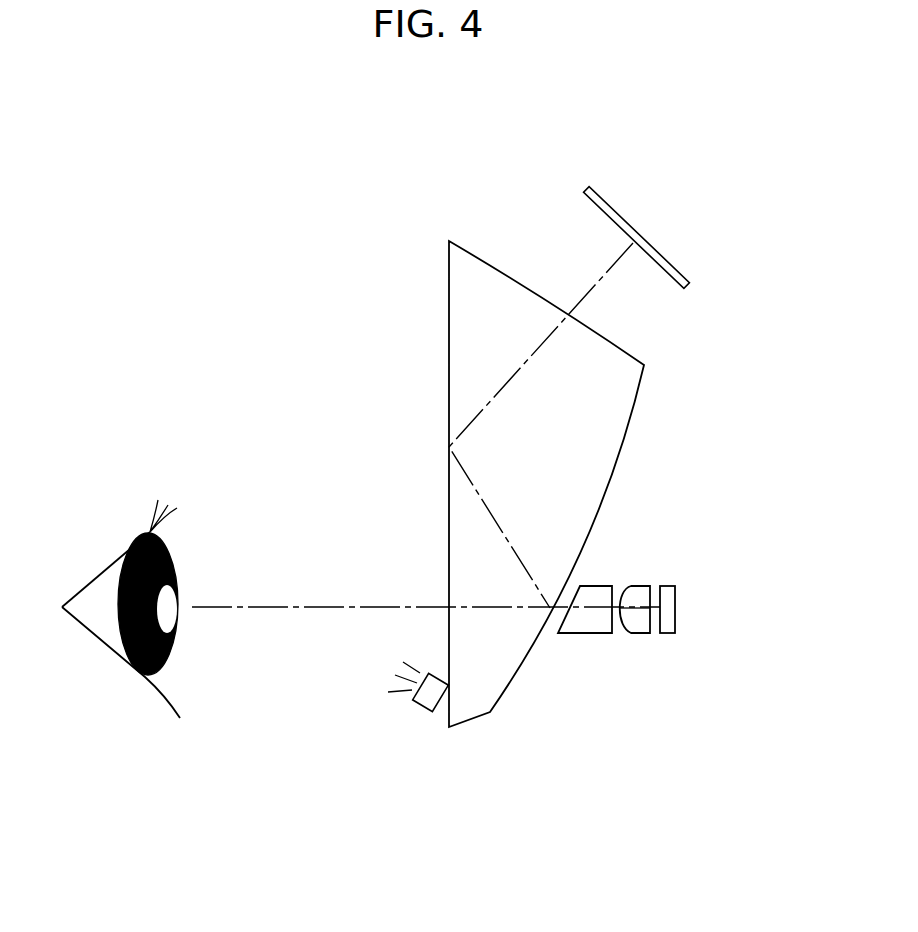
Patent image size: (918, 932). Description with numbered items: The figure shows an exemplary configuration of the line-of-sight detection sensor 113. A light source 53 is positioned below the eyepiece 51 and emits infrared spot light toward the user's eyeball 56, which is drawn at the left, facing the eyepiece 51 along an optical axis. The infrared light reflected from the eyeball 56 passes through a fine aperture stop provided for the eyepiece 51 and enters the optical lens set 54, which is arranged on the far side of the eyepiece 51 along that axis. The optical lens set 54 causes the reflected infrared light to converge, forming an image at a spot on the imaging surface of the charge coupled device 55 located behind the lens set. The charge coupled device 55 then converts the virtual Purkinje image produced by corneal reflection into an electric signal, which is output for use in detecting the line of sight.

The line-of-sight detection sensor 113 is at (395, 210).
The eyepiece 51 is at (648, 398).
The light source 53 is at (423, 707).
The optical lens set 54 is at (555, 639).
The charge coupled device (CCD) 55 is at (676, 598).
The user's eyeball 56 is at (98, 567).